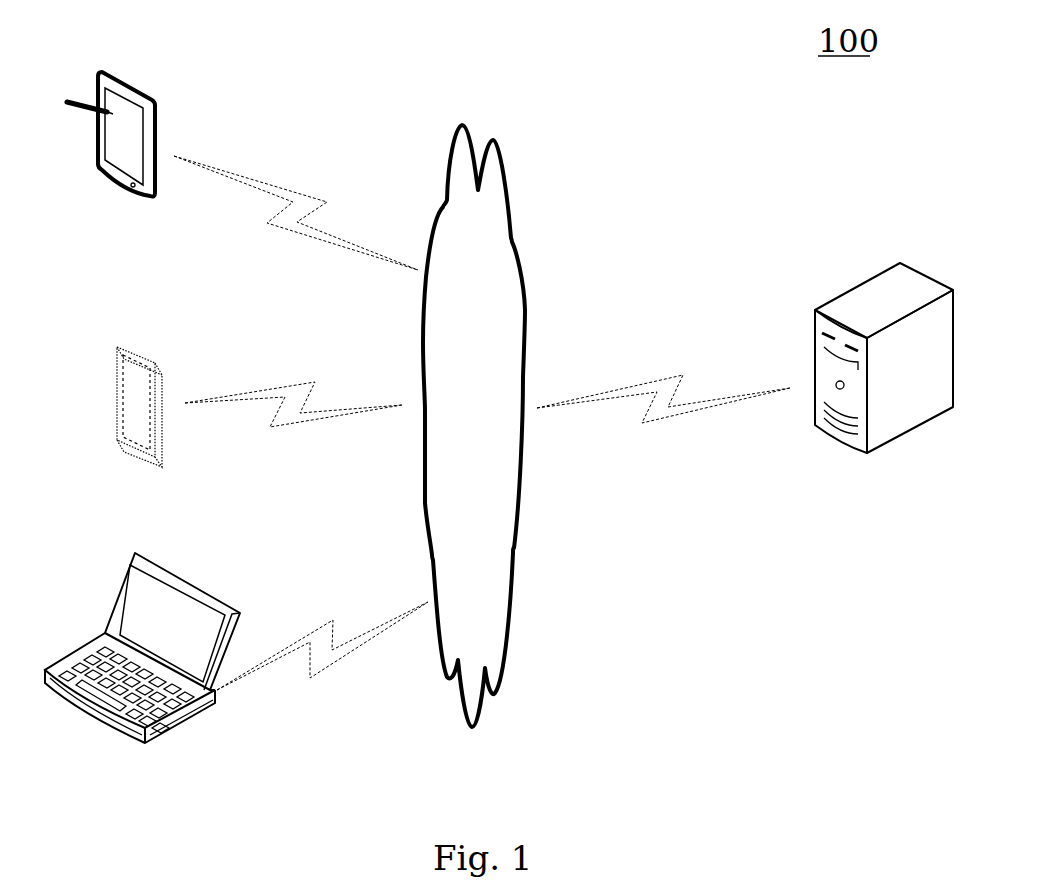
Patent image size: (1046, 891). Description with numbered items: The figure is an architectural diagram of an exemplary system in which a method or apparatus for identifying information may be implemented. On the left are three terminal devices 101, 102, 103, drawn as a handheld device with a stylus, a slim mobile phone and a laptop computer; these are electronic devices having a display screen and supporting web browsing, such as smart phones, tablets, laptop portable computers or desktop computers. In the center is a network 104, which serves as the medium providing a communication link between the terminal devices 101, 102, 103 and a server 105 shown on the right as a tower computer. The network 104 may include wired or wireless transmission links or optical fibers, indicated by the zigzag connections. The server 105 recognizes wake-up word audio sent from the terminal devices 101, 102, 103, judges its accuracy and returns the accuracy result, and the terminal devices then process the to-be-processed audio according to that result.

The terminal device 101 is at (157, 120).
The terminal device 102 is at (162, 387).
The terminal device 103 is at (160, 580).
The network 104 is at (530, 303).
The server 105 is at (827, 438).